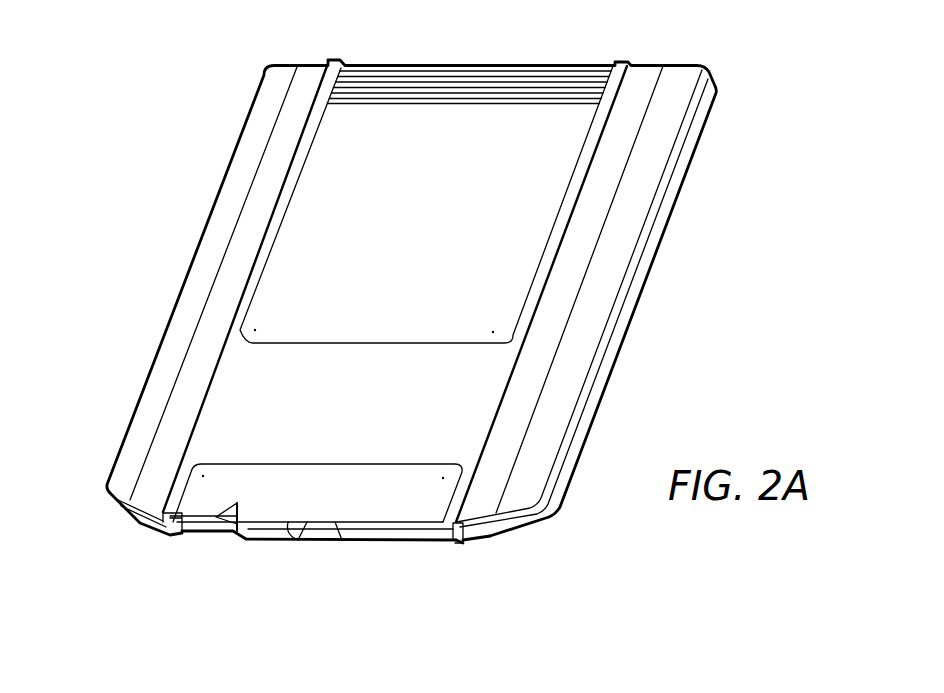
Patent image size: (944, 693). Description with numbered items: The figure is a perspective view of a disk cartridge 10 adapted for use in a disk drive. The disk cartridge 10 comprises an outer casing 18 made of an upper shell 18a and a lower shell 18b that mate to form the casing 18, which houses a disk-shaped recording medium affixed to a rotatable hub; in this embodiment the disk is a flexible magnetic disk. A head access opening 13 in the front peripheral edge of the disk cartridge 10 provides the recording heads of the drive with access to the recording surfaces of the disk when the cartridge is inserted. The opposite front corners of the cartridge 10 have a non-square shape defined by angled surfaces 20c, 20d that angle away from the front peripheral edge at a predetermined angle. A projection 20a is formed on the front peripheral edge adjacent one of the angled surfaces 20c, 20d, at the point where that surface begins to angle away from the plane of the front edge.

The disk cartridge 10 is at (212, 78).
The head access opening 13 is at (322, 528).
The outer casing 18 is at (557, 65).
The upper shell 18a is at (586, 397).
The lower shell 18b is at (653, 252).
The projection 20a is at (460, 543).
The angled surface 20c is at (175, 540).
The angled surface 20d is at (140, 528).